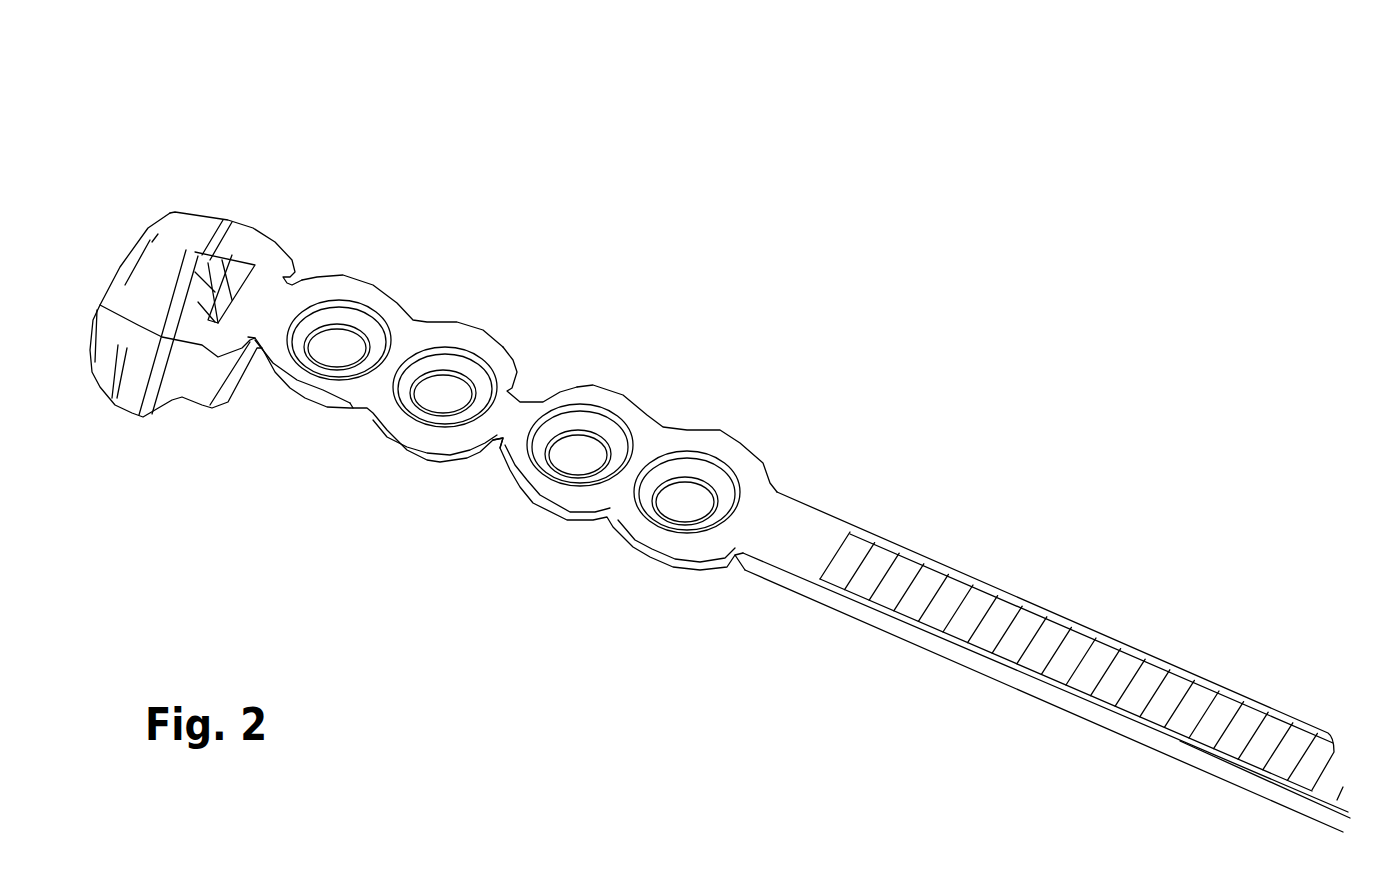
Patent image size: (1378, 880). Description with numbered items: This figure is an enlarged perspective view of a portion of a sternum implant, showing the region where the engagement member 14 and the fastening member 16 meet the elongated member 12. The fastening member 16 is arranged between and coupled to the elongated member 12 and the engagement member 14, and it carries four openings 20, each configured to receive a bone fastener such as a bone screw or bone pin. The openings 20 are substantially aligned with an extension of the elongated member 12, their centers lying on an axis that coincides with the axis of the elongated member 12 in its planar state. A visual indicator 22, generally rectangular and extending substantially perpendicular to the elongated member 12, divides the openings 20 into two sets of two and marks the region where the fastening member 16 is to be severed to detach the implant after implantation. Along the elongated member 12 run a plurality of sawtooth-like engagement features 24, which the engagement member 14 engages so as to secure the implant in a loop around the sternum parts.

The elongated member 12 is at (989, 585).
The engagement member 14 is at (240, 227).
The fastening member 16 is at (432, 363).
The opening 20 is at (692, 495).
The visual indicator 22 is at (523, 418).
The engagement feature 24 is at (1095, 668).